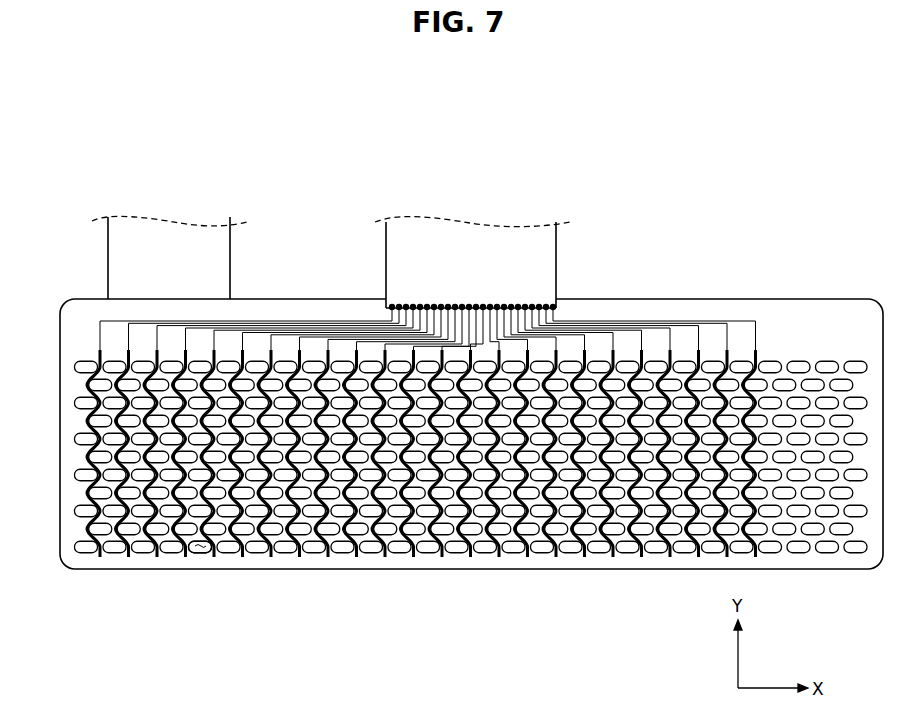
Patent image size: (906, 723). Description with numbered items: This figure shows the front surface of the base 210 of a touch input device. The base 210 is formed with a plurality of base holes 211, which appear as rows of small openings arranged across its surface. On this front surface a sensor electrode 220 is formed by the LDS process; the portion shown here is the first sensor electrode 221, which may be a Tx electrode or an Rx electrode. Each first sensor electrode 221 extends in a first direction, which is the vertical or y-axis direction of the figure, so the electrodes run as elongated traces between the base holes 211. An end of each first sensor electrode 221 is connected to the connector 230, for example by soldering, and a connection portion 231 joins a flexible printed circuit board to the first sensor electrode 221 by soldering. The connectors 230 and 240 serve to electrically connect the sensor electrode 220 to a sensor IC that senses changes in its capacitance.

The base 210 is at (479, 160).
The base hole 211 is at (201, 552).
The sensor electrode 220 is at (399, 487).
The first sensor electrode 221 is at (80, 530).
The connector 230 is at (384, 264).
The connection portion 231 is at (551, 307).
The connector 240 is at (109, 264).